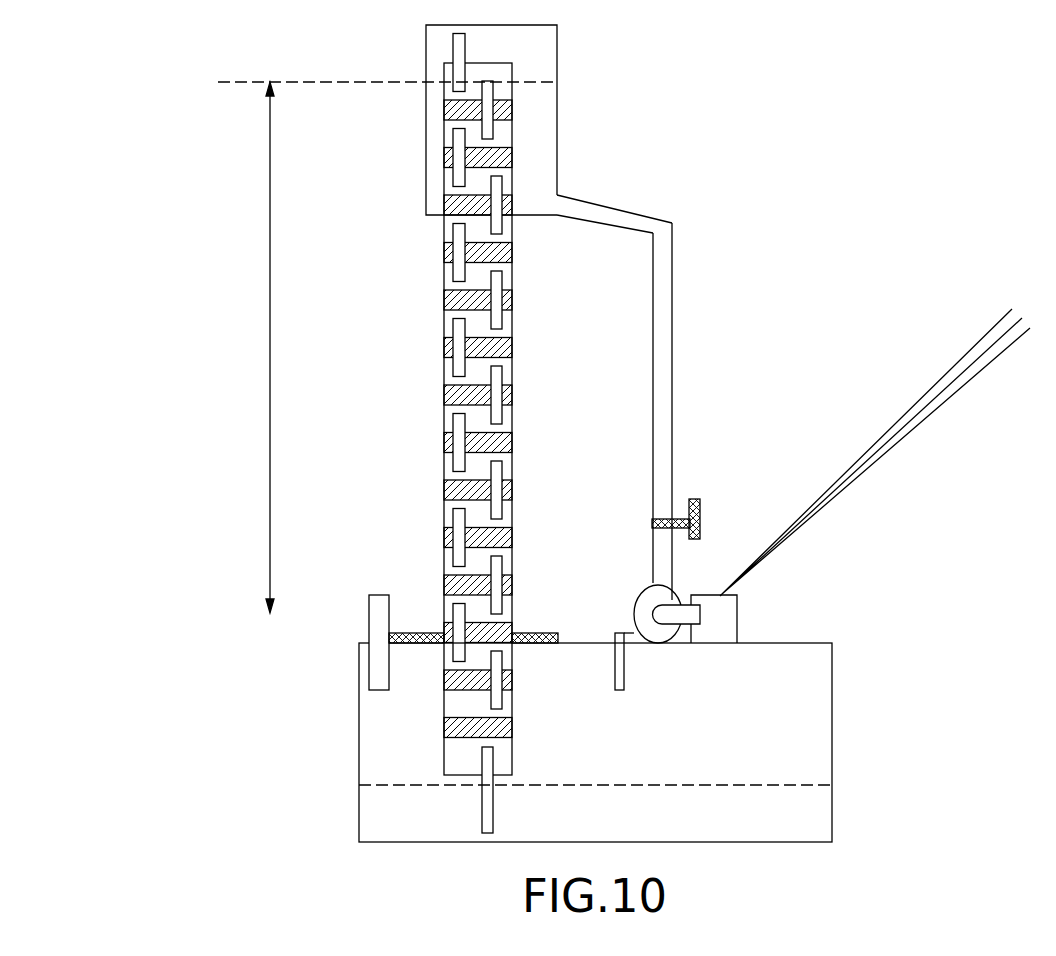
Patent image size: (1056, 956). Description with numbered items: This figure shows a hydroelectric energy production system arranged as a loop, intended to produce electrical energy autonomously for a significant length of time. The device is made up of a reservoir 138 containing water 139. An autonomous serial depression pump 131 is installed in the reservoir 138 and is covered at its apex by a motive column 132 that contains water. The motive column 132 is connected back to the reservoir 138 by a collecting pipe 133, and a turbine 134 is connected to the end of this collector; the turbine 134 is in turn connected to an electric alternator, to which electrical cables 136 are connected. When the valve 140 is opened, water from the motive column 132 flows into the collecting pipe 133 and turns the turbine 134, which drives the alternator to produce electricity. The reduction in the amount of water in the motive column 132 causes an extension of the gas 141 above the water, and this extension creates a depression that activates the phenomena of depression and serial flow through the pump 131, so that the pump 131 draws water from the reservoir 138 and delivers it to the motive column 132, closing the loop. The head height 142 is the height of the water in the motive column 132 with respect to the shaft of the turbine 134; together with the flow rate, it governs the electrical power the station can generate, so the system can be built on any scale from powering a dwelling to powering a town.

The autonomous serial depression pump 131 is at (425, 401).
The motive column 132 is at (572, 114).
The collecting pipe 133 is at (686, 275).
The turbine 134 is at (218, 613).
The electrical cables 136 is at (906, 451).
The reservoir 138 is at (845, 713).
The water 139 is at (740, 772).
The valve 140 is at (716, 503).
The gas 141 is at (539, 53).
The head height 142 is at (257, 343).